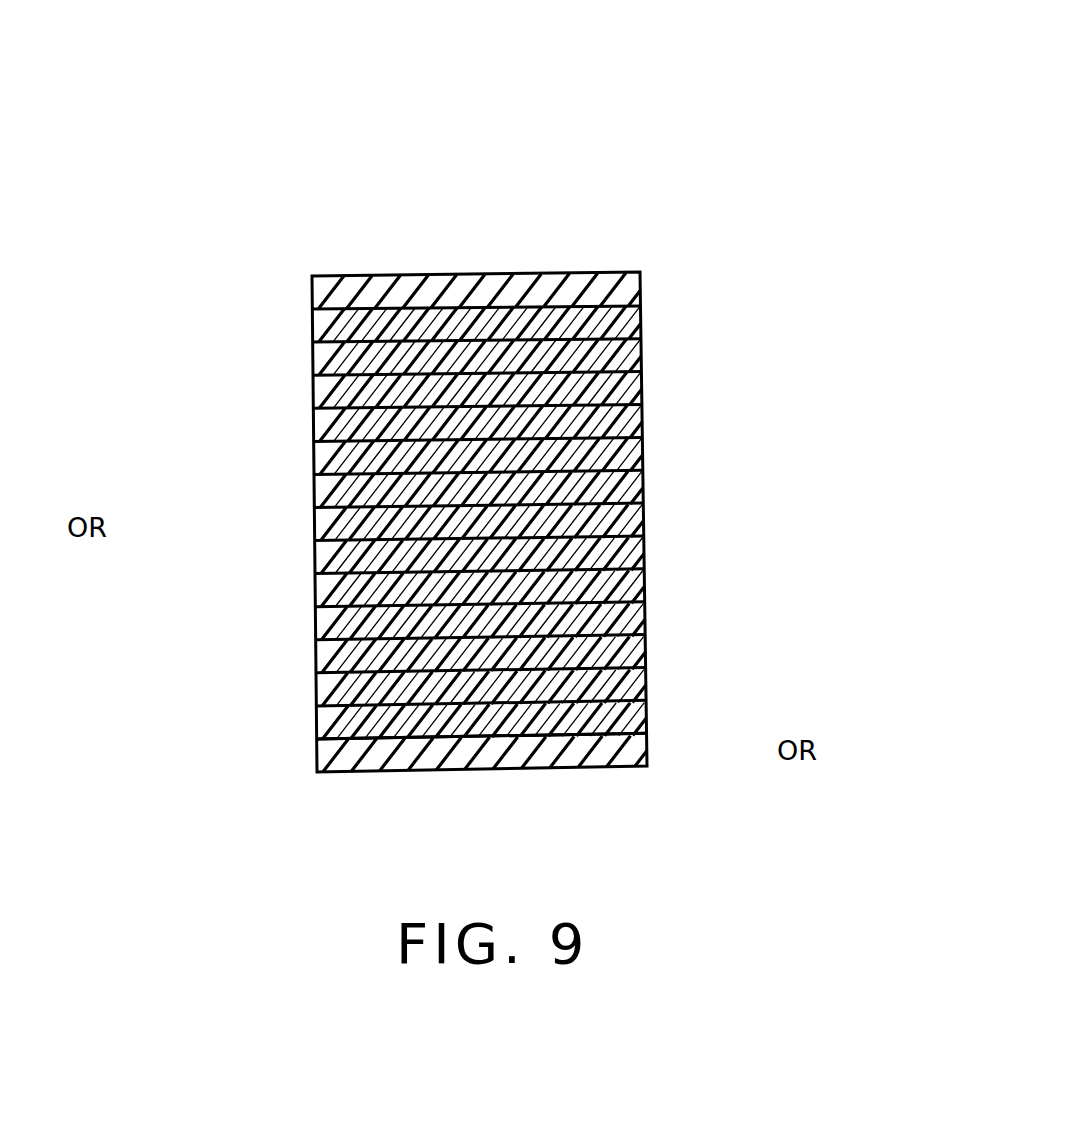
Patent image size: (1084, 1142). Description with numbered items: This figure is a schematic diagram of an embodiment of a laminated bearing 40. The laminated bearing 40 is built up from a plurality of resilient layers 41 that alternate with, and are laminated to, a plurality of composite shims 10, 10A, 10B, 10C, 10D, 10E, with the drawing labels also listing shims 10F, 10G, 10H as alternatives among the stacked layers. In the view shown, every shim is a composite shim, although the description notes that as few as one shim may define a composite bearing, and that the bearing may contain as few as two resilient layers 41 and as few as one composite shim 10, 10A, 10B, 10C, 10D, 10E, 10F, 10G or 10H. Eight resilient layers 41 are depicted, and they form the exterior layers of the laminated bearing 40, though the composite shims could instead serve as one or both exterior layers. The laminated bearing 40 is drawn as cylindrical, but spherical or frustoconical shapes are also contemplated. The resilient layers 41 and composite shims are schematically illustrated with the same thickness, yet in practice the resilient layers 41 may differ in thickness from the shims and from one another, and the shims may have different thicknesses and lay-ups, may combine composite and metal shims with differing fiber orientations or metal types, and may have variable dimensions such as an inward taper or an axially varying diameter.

The composite shim 10 is at (312, 330).
The composite shim 10A is at (522, 500).
The composite shim 10B is at (452, 535).
The composite shim 10C is at (544, 538).
The composite shim 10D is at (454, 571).
The composite shim 10E is at (543, 571).
The composite film 10F is at (451, 605).
The composite film 10G is at (544, 605).
The composite film 10H is at (518, 639).
The laminated bearing 40 is at (322, 159).
The resilient layer 41 is at (641, 287).